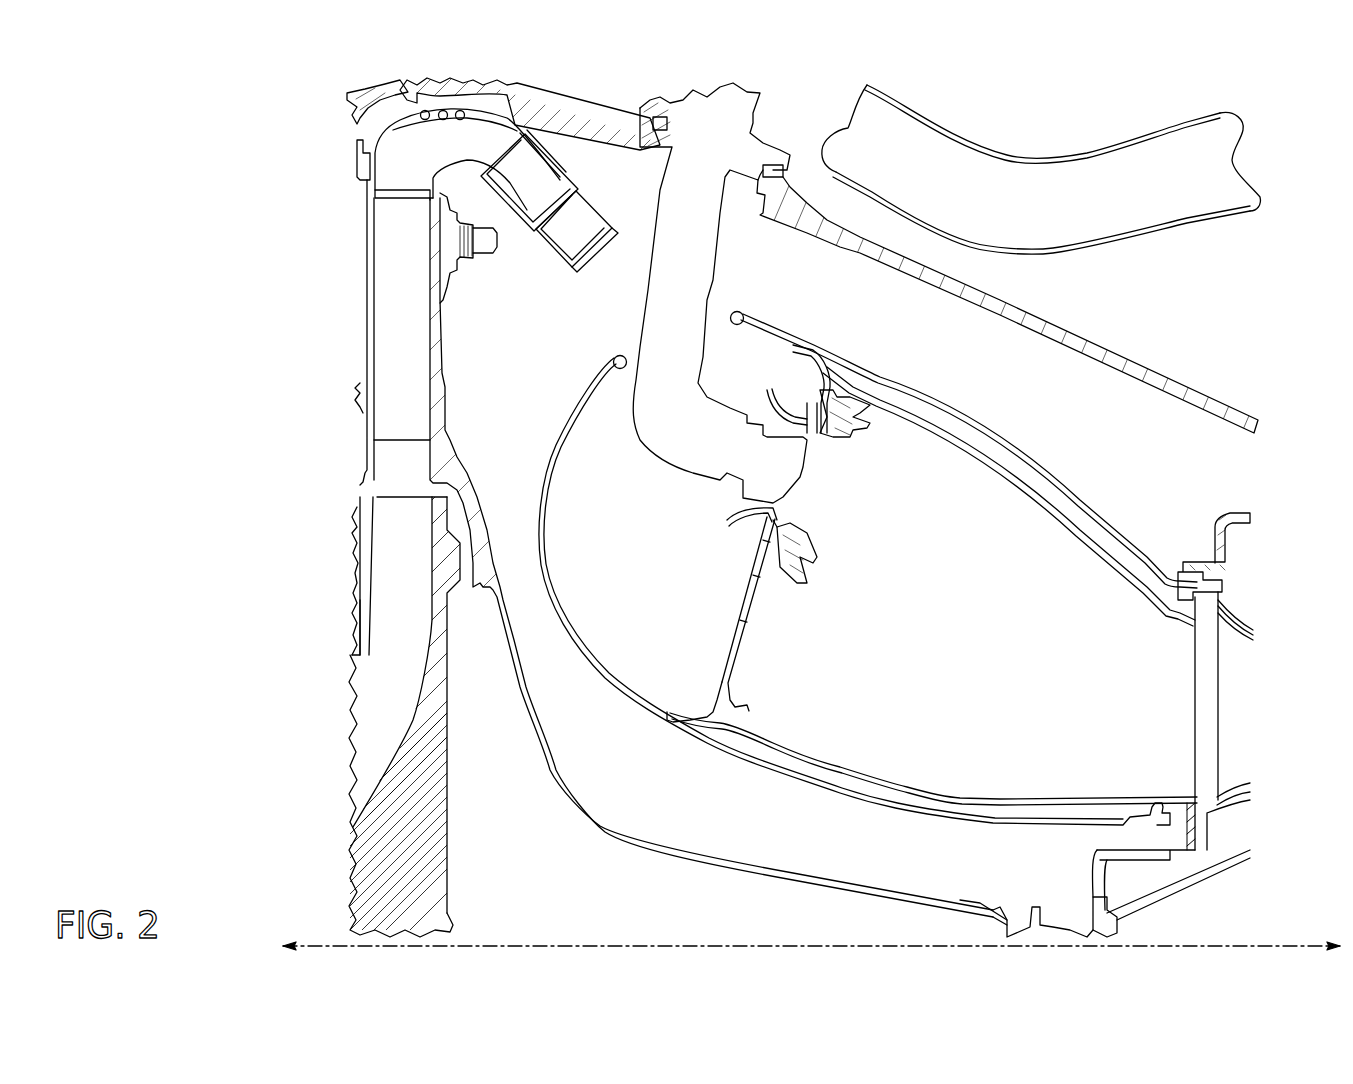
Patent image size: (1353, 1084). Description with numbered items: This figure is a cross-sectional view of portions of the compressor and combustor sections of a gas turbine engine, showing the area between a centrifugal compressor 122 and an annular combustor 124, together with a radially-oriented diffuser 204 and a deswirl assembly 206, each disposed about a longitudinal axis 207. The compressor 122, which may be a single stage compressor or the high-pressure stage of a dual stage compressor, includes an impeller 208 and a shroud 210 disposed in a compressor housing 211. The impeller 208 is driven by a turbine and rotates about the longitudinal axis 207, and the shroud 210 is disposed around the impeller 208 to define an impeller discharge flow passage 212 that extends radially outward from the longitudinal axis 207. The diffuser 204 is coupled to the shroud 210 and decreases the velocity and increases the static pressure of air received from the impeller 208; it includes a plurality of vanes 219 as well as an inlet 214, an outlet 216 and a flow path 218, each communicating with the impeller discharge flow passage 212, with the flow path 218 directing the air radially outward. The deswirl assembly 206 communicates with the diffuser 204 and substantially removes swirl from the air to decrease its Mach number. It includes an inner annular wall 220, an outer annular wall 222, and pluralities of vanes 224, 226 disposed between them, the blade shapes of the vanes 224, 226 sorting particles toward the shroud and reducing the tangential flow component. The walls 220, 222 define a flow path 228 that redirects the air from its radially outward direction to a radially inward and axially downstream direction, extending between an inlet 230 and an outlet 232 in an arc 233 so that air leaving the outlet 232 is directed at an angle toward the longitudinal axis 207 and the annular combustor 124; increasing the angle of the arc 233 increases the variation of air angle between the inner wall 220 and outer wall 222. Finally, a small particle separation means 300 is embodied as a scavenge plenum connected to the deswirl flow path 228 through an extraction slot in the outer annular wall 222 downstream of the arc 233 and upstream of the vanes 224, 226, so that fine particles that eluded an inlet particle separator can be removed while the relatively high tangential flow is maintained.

The centrifugal compressor 122 is at (313, 873).
The annular combustor 124 is at (793, 878).
The diffuser 204 is at (363, 303).
The deswirl assembly 206 is at (482, 107).
The longitudinal axis 207 is at (507, 943).
The impeller 208 is at (357, 837).
The shroud 210 is at (357, 557).
The compressor housing 211 is at (362, 101).
The impeller discharge flow passage 212 is at (363, 604).
The inlet 214 is at (387, 440).
The outlet 216 is at (376, 195).
The flow path 218 is at (402, 318).
The vanes 219 is at (418, 366).
The inner annular wall 220 is at (455, 164).
The outer annular wall 222 is at (413, 101).
The vanes 224 is at (537, 184).
The vanes 226 is at (587, 218).
The flow path 228 is at (470, 149).
The inlet 230 is at (413, 200).
The outlet 232 is at (590, 257).
The arc 233 is at (445, 94).
The small particle separation means 300 is at (558, 124).